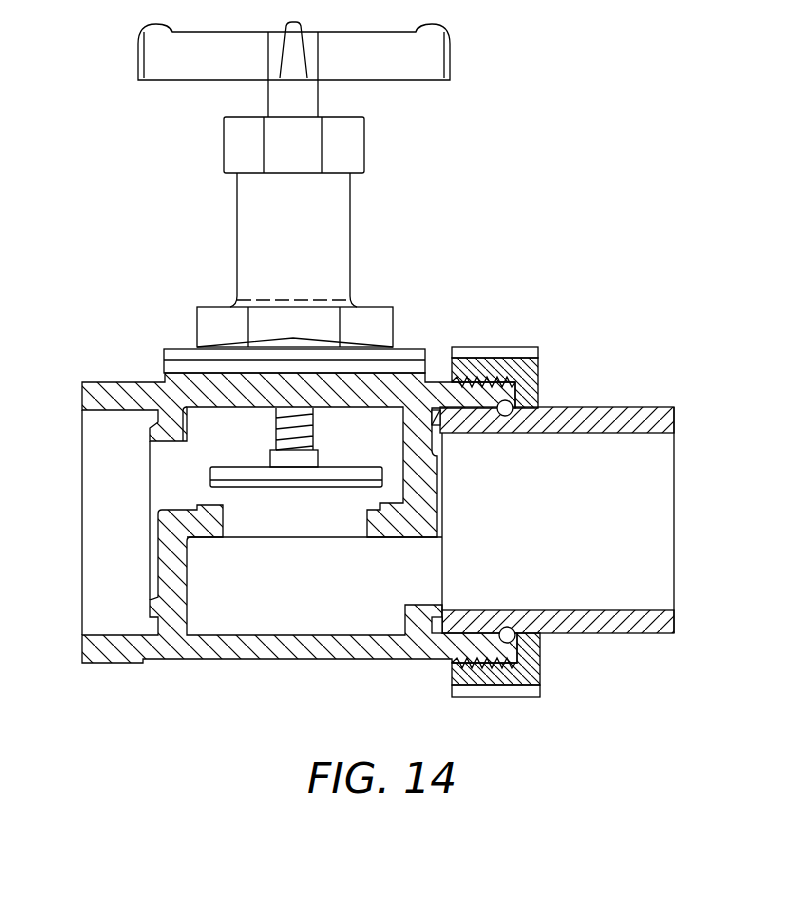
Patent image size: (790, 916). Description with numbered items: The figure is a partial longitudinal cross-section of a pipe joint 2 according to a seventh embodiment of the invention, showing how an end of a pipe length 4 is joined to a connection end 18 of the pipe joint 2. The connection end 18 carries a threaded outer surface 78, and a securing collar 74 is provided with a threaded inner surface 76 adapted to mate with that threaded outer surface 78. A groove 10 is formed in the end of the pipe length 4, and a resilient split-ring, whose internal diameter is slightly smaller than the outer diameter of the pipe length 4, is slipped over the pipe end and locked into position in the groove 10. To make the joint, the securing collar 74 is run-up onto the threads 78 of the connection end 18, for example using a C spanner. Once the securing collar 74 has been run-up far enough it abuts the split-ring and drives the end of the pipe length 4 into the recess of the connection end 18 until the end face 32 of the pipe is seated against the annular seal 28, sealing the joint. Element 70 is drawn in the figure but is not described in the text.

The pipe joint 2 is at (230, 662).
The pipe length 4 is at (613, 633).
The groove 10 is at (510, 627).
The connection end 18 is at (404, 668).
The annular seal 28 is at (430, 619).
The end face 32 is at (433, 603).
The O-ring seal 70 is at (507, 416).
The securing collar 74 is at (498, 347).
The threaded inner surface 76 is at (452, 678).
The threaded outer surface 78 is at (468, 372).